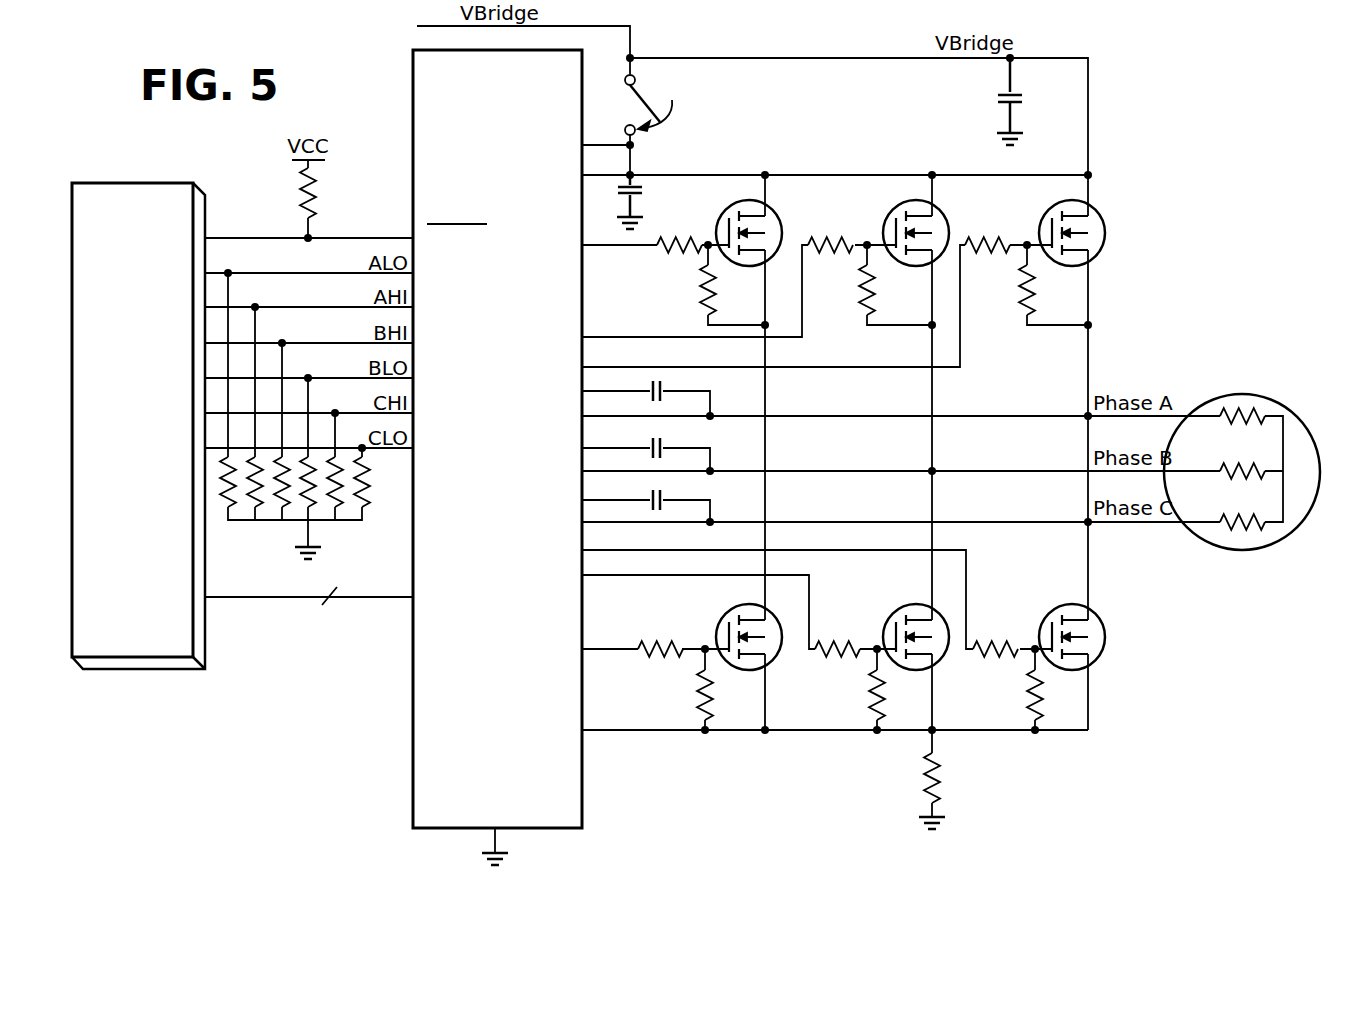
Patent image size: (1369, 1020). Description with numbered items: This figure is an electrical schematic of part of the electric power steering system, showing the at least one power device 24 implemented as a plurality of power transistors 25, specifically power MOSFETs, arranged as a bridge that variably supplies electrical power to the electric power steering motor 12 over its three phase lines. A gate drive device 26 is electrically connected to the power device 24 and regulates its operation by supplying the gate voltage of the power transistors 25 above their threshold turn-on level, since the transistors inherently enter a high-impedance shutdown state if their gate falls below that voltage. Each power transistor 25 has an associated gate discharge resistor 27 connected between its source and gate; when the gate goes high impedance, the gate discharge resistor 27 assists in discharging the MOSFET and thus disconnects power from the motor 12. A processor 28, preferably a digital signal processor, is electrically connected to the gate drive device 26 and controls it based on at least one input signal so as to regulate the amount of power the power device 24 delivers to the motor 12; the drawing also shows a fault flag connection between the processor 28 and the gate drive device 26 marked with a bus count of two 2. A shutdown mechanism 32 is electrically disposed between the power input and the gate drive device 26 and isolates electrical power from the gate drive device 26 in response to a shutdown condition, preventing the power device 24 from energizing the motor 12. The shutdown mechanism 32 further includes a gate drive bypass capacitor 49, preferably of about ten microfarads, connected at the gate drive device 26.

The fault flag bus 2 is at (309, 585).
The electric power steering motor 12 is at (1240, 551).
The power device 24 is at (1056, 758).
The power transistors 25 is at (782, 228).
The gate drive device 26 is at (542, 828).
The gate discharge resistors 27 is at (704, 280).
The processor 28 is at (142, 669).
The shutdown mechanism 32 is at (683, 104).
The gate drive bypass capacitor 49 is at (636, 177).